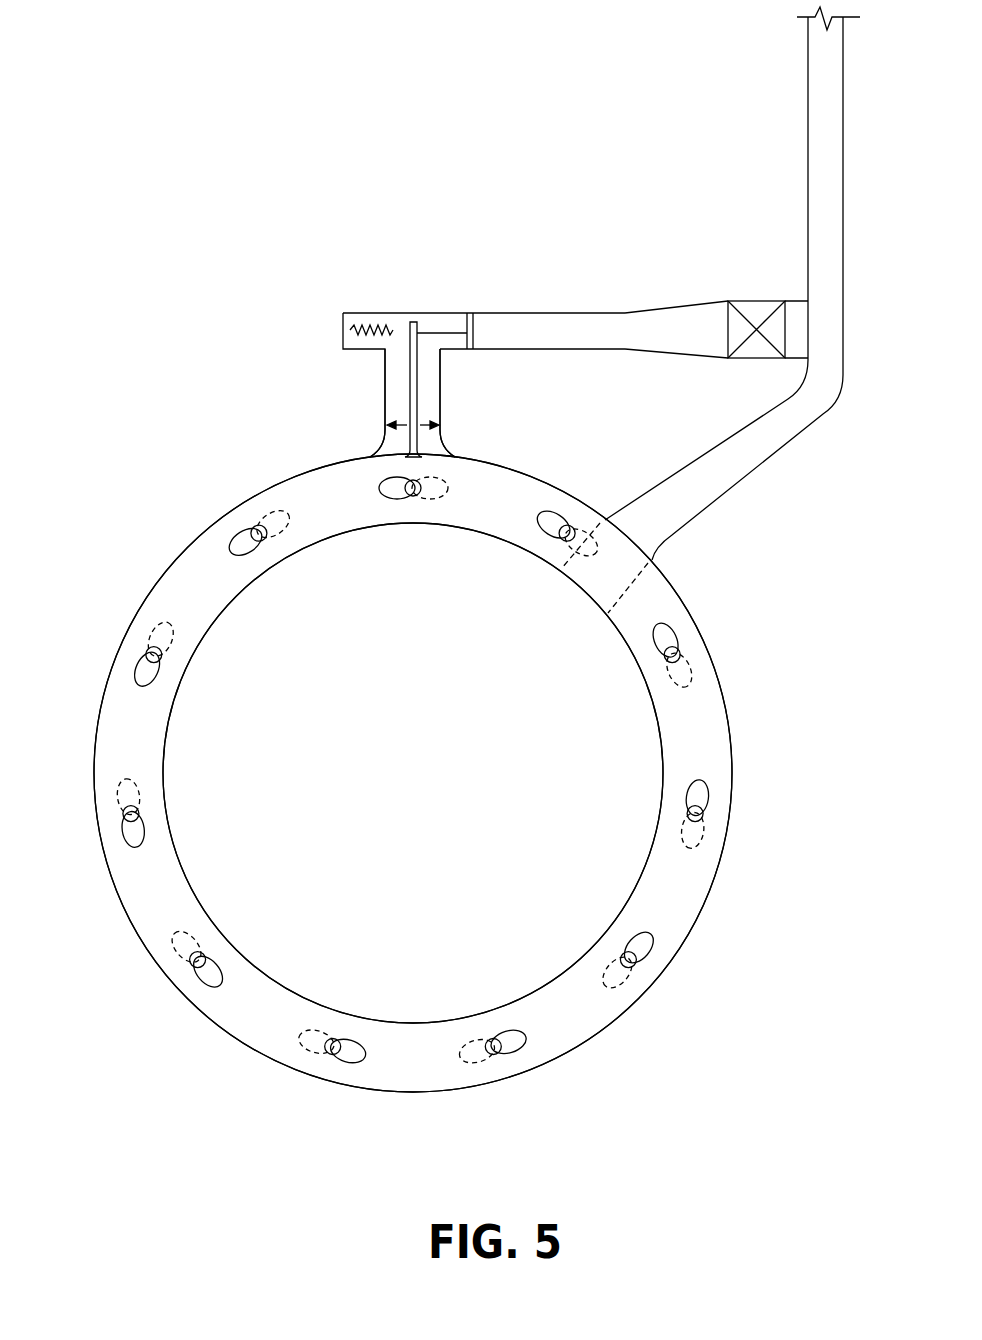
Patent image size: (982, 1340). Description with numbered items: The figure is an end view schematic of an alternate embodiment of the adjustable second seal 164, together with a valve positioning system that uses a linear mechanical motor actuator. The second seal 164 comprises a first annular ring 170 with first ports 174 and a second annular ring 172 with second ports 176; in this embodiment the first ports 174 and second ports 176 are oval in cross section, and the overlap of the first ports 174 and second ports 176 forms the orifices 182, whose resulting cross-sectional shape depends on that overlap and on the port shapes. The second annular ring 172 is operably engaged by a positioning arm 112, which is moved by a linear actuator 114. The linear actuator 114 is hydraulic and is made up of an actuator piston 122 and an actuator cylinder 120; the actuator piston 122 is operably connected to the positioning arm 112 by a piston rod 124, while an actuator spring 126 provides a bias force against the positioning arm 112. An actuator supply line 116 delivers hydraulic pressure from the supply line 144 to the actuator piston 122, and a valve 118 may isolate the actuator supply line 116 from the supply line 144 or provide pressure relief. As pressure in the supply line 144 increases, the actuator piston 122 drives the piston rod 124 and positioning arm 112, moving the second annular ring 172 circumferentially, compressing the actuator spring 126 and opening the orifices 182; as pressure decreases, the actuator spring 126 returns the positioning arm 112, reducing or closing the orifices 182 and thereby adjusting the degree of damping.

The positioning arm 112 is at (414, 383).
The linear actuator 114 is at (343, 313).
The actuator supply line 116 is at (678, 305).
The valve 118 is at (764, 300).
The actuator cylinder 120 is at (530, 349).
The actuator piston 122 is at (478, 323).
The piston rod 124 is at (442, 313).
The actuator spring 126 is at (368, 313).
The supply line 144 is at (808, 118).
The second seal 164 is at (208, 1078).
The first annular ring 170 is at (212, 568).
The second annular ring 172 is at (173, 603).
The first ports 174 is at (702, 799).
The second ports 176 is at (702, 843).
The orifices 182 is at (703, 822).